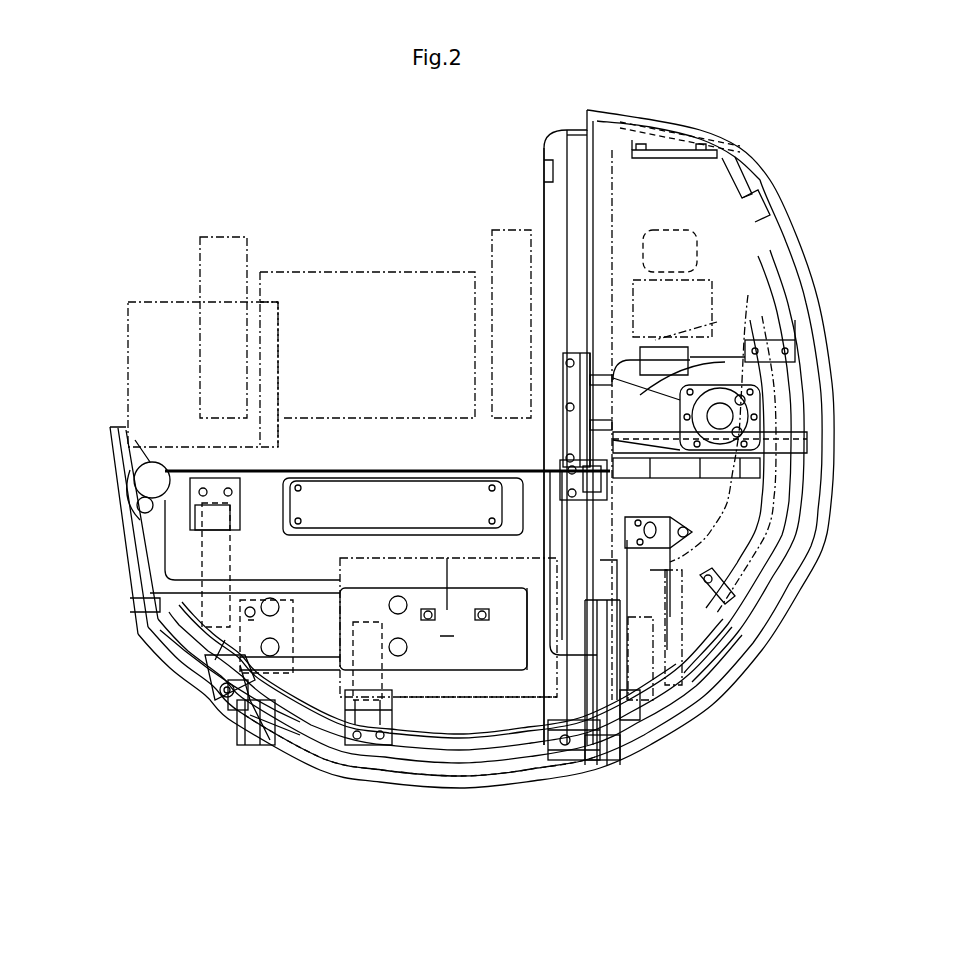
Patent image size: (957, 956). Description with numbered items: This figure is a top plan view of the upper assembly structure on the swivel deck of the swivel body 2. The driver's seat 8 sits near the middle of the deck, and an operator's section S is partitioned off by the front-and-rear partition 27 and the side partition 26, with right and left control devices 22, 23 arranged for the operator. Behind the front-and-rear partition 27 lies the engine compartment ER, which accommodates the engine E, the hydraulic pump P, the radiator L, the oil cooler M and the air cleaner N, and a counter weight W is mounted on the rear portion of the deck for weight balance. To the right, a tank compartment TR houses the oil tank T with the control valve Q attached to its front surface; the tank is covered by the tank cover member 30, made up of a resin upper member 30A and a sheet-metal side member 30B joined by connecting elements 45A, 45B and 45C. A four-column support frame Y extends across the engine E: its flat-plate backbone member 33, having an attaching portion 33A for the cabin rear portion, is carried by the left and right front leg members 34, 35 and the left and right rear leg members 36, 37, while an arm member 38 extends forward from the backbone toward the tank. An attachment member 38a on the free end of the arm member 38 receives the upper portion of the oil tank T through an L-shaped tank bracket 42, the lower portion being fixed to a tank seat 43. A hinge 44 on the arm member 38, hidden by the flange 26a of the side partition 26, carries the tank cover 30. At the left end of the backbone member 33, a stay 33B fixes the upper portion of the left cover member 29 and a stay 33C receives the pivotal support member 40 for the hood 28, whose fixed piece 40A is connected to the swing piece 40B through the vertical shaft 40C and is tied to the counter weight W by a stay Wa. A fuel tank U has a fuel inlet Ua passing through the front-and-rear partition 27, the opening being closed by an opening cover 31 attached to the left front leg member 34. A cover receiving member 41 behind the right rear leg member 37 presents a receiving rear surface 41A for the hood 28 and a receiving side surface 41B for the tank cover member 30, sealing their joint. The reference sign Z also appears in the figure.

The swivel body 2 is at (413, 240).
The operator's section S is at (375, 245).
The driver's seat 8 is at (445, 270).
The control device 22 is at (200, 240).
The fuel tank U is at (150, 300).
The left front leg member 34 is at (270, 520).
The control device 23 is at (492, 235).
The side partition 26 is at (543, 132).
The flange 26a is at (580, 150).
The connecting element 45B is at (722, 153).
The tank compartment TR is at (717, 203).
The upper member 30A is at (733, 230).
The side member 30B is at (790, 253).
The tank cover member 30 is at (897, 170).
The control valve Q is at (717, 322).
The oil tank T is at (725, 362).
The tank seat 43 is at (790, 348).
The tank bracket 42 is at (652, 360).
The hinge 44 is at (575, 388).
The right front leg member 35 is at (560, 470).
The connecting element 45A is at (813, 440).
The attachment member 38a is at (643, 458).
The arm member 38 is at (613, 498).
The oil cooler M is at (677, 687).
The radiator L is at (645, 703).
The stopper pin 45C is at (640, 700).
The front-and-rear partition 27 is at (300, 487).
The attaching portion 33A is at (397, 590).
The air cleaner N is at (305, 615).
The hydraulic pump P is at (293, 613).
The engine E is at (337, 690).
The left rear leg member 36 is at (338, 730).
The opening cover 31 is at (190, 497).
The fuel inlet Ua is at (127, 510).
The left cover member 29 is at (140, 632).
The stay 33B is at (150, 587).
The direction Z is at (120, 620).
The stay 33C is at (213, 647).
The backbone member 33 is at (482, 668).
The hood 28 is at (458, 760).
The counter weight W is at (377, 787).
The stay Wa is at (277, 720).
The engine compartment ER is at (445, 723).
The support frame Y is at (513, 673).
The right rear leg member 37 is at (553, 740).
The receiving rear surface 41A is at (590, 760).
The receiving side surface 41B is at (610, 747).
The cover receiving member 41 is at (585, 835).
The fixed piece 40A is at (215, 678).
The vertical shaft 40C is at (208, 693).
The swing piece 40B is at (238, 727).
The pivotal support member 40 is at (257, 800).